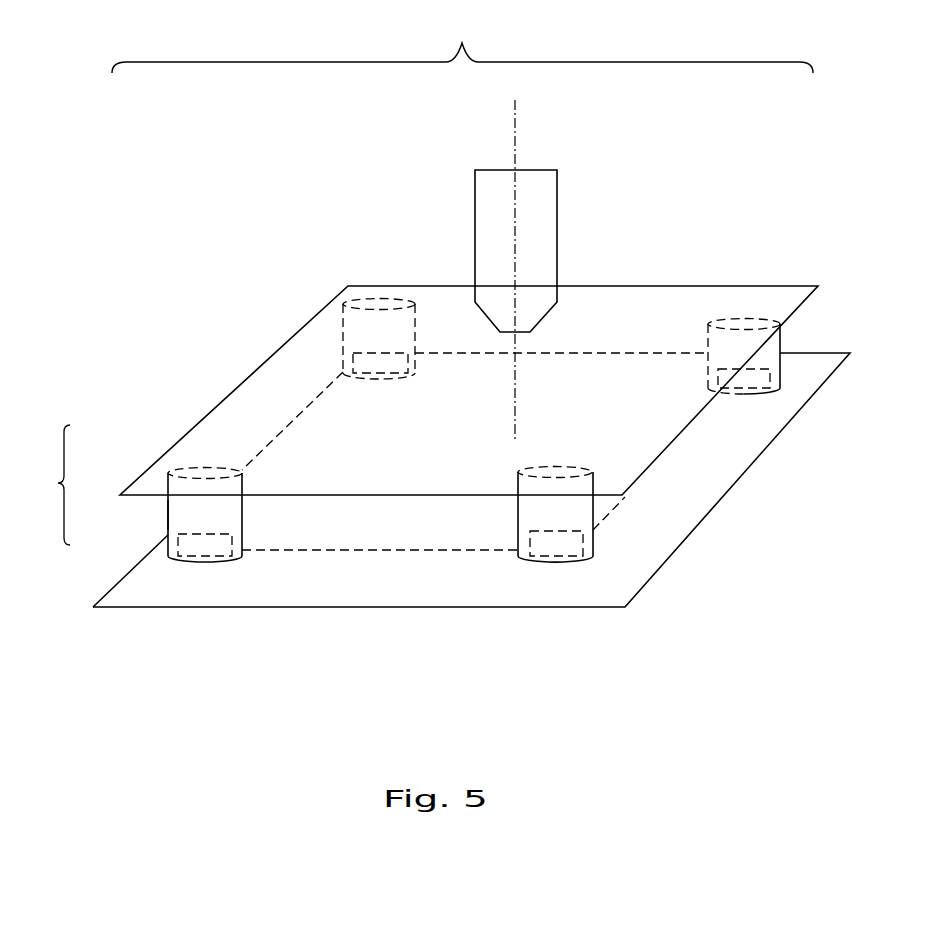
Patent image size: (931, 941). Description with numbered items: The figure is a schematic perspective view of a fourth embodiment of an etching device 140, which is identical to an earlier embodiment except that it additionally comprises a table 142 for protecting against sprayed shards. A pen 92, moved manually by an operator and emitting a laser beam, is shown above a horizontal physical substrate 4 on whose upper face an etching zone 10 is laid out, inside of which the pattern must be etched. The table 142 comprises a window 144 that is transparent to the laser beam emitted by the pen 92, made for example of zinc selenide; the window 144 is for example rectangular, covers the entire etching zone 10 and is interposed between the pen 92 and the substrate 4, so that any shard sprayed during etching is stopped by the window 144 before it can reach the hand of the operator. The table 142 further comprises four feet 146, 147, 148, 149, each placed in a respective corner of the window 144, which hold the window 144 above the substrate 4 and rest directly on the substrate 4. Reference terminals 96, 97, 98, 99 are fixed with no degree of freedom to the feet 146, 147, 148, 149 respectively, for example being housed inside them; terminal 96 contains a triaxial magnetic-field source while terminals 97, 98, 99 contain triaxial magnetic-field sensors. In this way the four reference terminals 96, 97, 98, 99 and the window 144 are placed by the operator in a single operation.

The etching device 140 is at (462, 46).
The pen 92 is at (575, 188).
The window 144 is at (187, 440).
The foot 146 is at (168, 517).
The table 142 is at (42, 485).
The substrate 4 is at (735, 485).
The terminal 96 is at (200, 562).
The terminal 97 is at (557, 563).
The foot 148 is at (780, 348).
The foot 149 is at (343, 330).
The terminal 98 is at (772, 370).
The terminal 99 is at (353, 358).
The etching zone 10 is at (380, 552).
The foot 147 is at (593, 512).